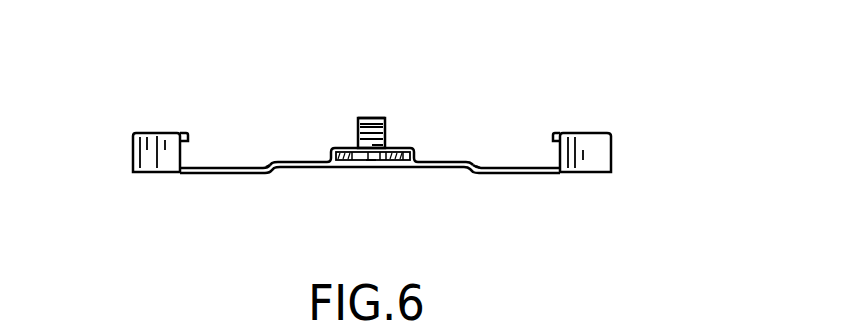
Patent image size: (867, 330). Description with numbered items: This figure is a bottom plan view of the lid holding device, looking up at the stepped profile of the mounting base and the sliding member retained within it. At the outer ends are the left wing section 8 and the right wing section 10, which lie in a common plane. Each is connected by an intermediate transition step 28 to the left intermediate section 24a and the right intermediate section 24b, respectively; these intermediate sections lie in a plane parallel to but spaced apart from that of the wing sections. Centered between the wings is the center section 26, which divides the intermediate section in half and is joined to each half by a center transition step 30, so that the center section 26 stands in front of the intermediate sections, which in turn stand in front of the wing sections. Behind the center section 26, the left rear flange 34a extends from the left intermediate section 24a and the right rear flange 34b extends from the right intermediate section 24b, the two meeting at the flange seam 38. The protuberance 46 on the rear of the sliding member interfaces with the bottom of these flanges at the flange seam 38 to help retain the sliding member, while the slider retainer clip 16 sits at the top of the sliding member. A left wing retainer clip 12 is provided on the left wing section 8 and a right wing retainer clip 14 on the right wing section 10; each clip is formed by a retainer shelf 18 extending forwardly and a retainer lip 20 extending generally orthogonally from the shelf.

The left wing section 8 is at (217, 175).
The right wing section 10 is at (545, 175).
The left wing retainer clip 12 is at (133, 150).
The right wing retainer clip 14 is at (612, 167).
The slider retainer clip 16 is at (389, 125).
The retainer shelf 18 is at (147, 152).
The retainer lip 20 is at (153, 133).
The left intermediate section 24a is at (291, 154).
The right intermediate section 24b is at (470, 146).
The center section 26 is at (412, 143).
The intermediate transition step 28 is at (267, 163).
The center transition step 30 is at (325, 149).
The left rear flange 34a is at (338, 168).
The right rear flange 34b is at (396, 170).
The flange seam 38 is at (370, 170).
The protuberance 46 is at (385, 165).